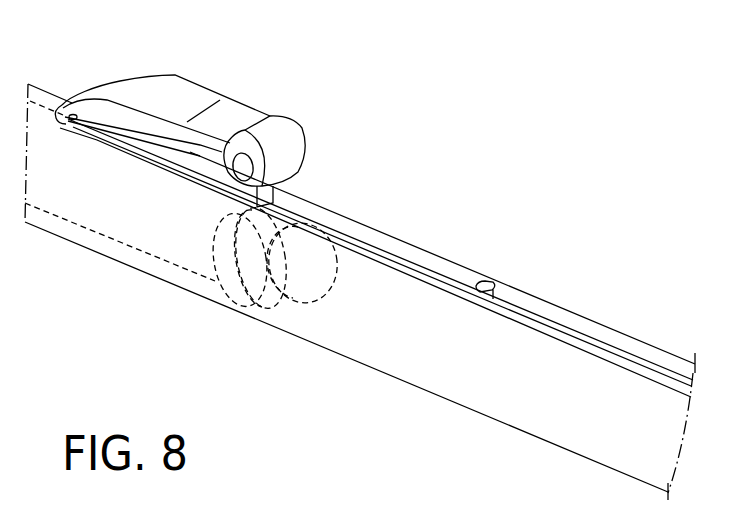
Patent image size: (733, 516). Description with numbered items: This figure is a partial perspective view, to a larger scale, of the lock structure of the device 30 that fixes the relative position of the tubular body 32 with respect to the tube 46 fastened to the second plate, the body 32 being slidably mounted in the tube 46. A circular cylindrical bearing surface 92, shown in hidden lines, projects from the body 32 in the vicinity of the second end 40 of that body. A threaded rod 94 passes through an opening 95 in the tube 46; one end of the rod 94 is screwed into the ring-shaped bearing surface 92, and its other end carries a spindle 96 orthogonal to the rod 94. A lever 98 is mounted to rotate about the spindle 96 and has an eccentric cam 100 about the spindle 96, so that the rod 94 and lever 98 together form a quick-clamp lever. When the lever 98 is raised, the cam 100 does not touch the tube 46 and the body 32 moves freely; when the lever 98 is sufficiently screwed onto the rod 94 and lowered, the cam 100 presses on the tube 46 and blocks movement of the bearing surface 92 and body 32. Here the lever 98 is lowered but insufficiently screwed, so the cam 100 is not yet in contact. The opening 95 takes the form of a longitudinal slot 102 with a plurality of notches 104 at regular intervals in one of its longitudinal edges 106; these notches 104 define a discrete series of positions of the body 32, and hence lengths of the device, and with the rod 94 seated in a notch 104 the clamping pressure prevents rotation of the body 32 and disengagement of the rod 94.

The panel 30 is at (495, 131).
The body 32 is at (175, 271).
The second end 40 is at (286, 324).
The tube 46 is at (596, 318).
The circular cylindrical bearing surface 92 is at (218, 316).
The threaded rod 94 is at (306, 150).
The opening 95 is at (366, 240).
The spindle 96 is at (243, 156).
The lever 98 is at (189, 88).
The eccentric cam 100 is at (233, 186).
The longitudinal slot 102 is at (548, 326).
The notches 104 is at (486, 280).
The longitudinal edge 106 is at (628, 356).